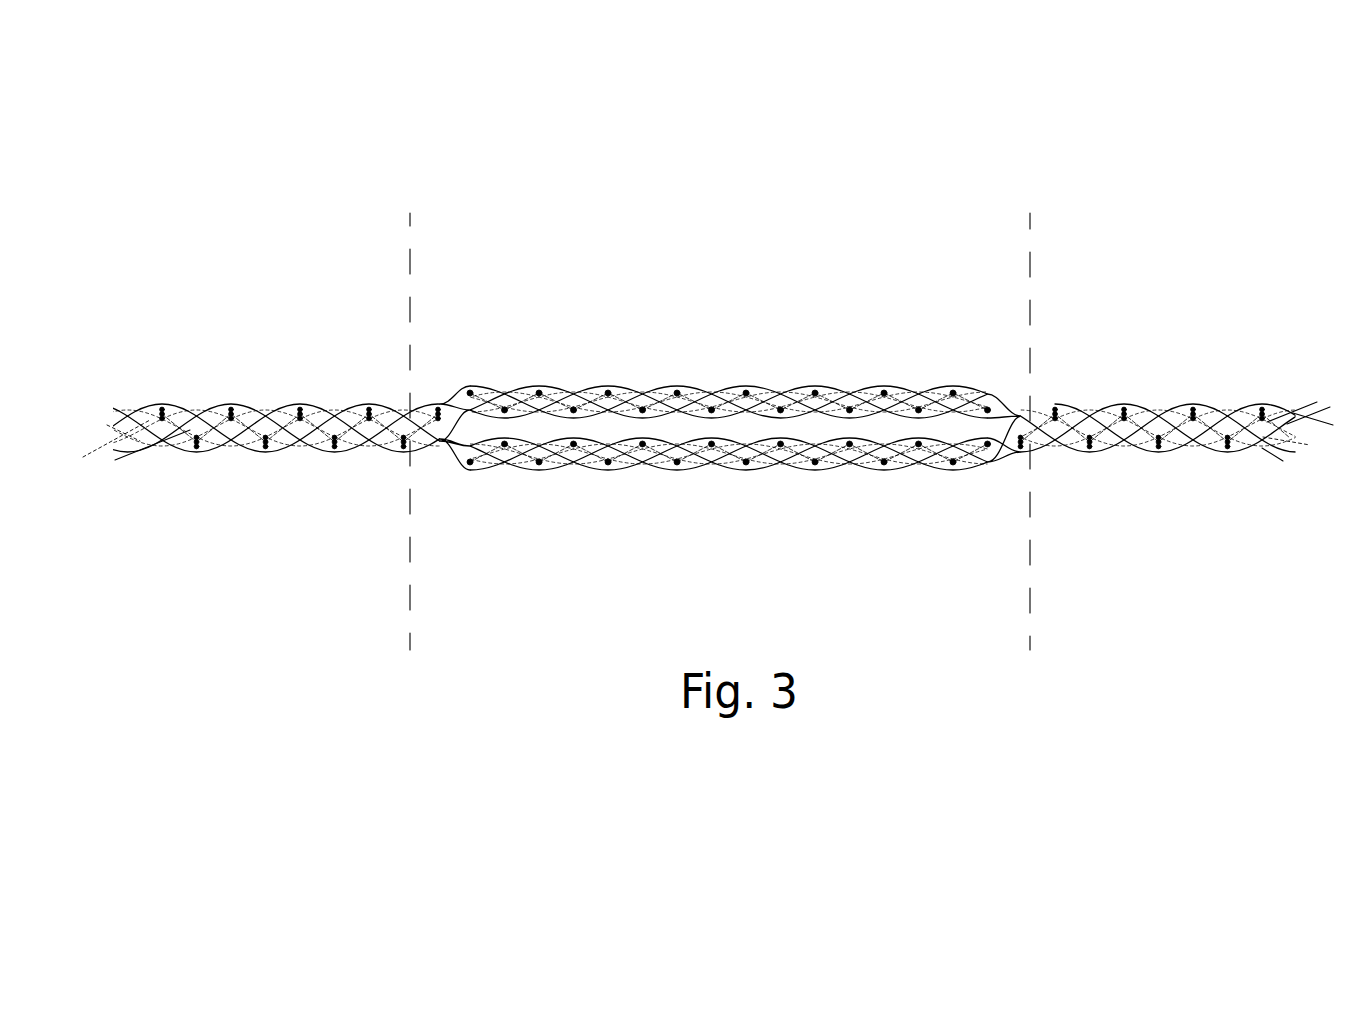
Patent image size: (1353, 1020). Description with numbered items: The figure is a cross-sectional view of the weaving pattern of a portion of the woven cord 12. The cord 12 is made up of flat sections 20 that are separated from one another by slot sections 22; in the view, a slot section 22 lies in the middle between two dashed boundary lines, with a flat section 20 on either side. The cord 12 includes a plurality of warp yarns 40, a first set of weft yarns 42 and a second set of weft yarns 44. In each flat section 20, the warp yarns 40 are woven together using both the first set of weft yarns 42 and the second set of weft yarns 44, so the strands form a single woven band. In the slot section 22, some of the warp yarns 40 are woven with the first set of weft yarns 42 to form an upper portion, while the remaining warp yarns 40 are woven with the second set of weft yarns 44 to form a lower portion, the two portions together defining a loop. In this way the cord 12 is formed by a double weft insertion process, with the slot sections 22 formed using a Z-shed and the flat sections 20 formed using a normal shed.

The woven cord 12 is at (890, 146).
The flat sections 20 is at (139, 356).
The slot sections 22 is at (650, 363).
The warp yarns 40 is at (262, 409).
The first set of weft yarns 42 is at (302, 411).
The second set of weft yarns 44 is at (336, 444).